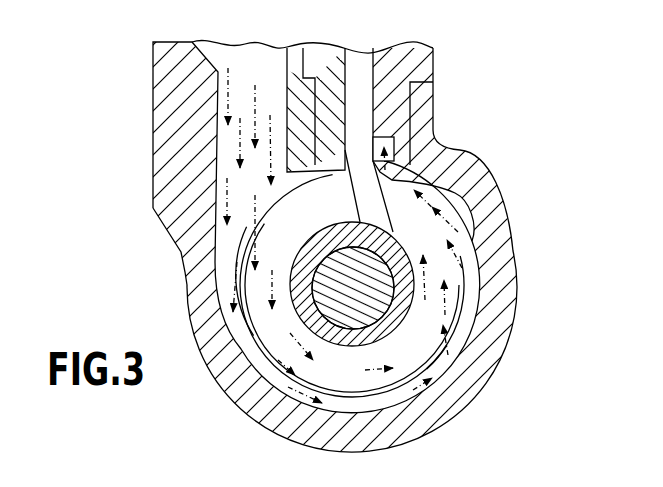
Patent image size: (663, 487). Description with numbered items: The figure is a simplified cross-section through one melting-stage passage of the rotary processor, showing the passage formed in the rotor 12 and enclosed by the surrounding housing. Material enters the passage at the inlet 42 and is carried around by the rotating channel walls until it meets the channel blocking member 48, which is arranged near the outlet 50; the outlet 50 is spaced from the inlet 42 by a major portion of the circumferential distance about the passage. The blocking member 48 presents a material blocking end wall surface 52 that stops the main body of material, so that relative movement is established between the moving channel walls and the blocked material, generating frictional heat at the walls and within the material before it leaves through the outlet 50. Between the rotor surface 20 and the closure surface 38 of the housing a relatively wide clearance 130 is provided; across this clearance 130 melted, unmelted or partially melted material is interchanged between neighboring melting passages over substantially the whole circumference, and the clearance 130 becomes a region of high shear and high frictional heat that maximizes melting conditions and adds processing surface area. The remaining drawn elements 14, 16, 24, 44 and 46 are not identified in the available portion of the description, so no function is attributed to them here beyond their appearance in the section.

The rotor 12 is at (342, 337).
The hub 14 is at (400, 303).
The housing 16 is at (243, 397).
The rotor surface 20 is at (460, 308).
The outer chamber wall 24 is at (458, 262).
The closure surface 38 is at (446, 374).
The inlet 42 is at (153, 143).
The housing shoulder 44 is at (218, 198).
The inlet channel 46 is at (218, 72).
The channel blocking member 48 is at (362, 60).
The outlet 50 is at (394, 133).
The material blocking end wall surface 52 is at (388, 208).
The clearance 130 is at (238, 340).